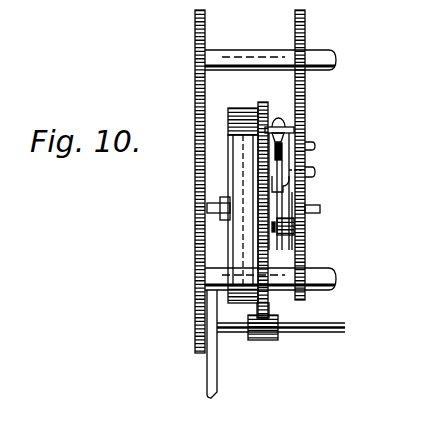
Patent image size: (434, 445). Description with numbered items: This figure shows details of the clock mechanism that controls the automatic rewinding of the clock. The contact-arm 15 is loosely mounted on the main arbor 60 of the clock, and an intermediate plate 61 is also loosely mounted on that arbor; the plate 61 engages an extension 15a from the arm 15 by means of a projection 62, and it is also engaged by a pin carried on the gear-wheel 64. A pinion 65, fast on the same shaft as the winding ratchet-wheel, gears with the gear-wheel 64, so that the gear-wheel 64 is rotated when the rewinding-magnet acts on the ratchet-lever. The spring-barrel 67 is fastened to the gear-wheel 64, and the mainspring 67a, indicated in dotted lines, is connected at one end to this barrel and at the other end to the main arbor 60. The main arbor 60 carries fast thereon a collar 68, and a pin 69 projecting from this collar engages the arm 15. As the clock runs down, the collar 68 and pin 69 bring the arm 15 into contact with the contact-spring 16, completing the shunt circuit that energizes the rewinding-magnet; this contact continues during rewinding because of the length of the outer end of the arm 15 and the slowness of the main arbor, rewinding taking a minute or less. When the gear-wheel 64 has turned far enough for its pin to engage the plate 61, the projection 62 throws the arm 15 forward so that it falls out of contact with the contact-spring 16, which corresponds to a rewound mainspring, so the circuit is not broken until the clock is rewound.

The contact-arm 15 is at (292, 168).
The extension 15a is at (279, 153).
The contact-spring 16 is at (287, 128).
The main arbor 60 is at (322, 210).
The intermediate plate 61 is at (268, 230).
The projection 62 is at (250, 173).
The gear-wheel 64 is at (268, 305).
The pinion 65 is at (281, 338).
The spring-barrel 67 is at (237, 303).
The mainspring 67a is at (230, 128).
The collar 68 is at (290, 225).
The pin 69 is at (290, 195).